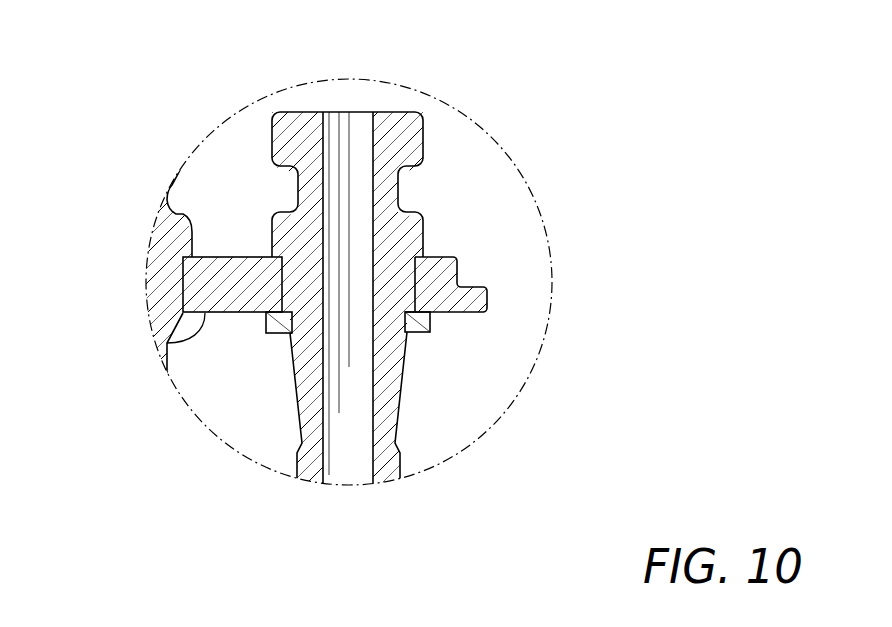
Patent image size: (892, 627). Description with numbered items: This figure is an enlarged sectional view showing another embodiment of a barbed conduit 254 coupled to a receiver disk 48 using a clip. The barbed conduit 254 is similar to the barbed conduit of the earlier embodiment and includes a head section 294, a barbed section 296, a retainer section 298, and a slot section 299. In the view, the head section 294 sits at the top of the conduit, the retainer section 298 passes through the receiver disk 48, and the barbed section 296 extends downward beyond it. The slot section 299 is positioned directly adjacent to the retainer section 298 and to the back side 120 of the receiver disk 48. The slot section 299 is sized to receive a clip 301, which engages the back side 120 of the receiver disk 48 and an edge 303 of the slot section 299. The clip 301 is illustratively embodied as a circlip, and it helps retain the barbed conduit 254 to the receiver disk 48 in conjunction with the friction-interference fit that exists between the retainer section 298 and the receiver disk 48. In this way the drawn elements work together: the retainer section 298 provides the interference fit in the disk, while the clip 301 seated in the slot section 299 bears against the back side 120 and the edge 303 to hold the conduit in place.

The barbed conduit 254 is at (442, 152).
The head section 294 is at (425, 193).
The retainer section 298 is at (415, 285).
The receiver disk 48 is at (490, 297).
The clip 301 is at (435, 323).
The edge 303 is at (415, 332).
The barbed section 296 is at (285, 428).
The back side 120 is at (168, 346).
The slot section 299 is at (277, 322).